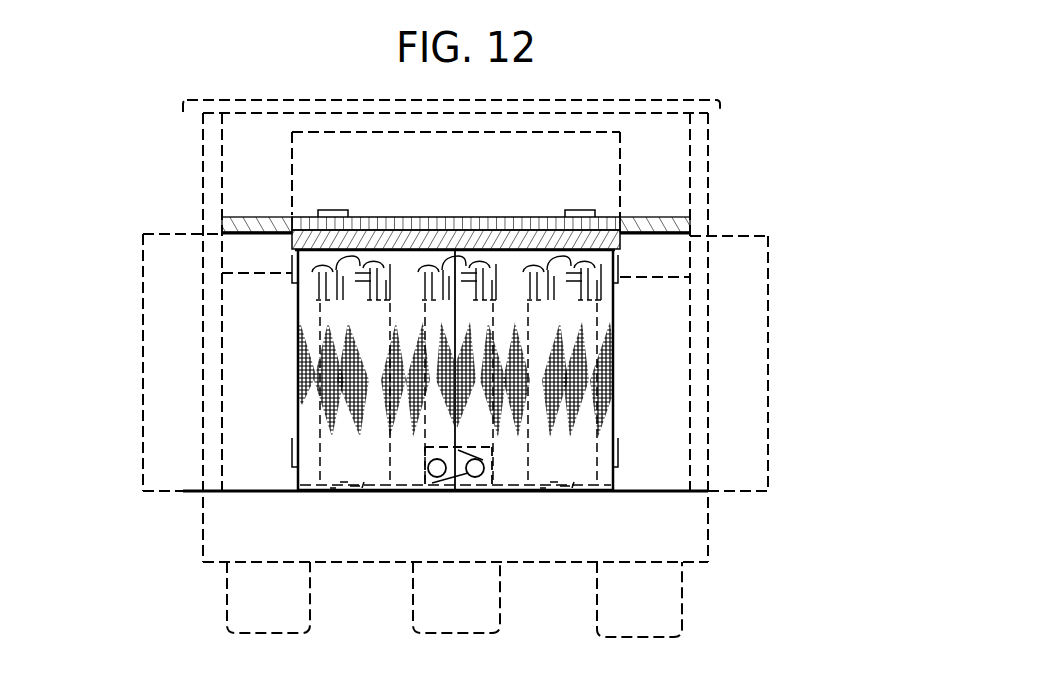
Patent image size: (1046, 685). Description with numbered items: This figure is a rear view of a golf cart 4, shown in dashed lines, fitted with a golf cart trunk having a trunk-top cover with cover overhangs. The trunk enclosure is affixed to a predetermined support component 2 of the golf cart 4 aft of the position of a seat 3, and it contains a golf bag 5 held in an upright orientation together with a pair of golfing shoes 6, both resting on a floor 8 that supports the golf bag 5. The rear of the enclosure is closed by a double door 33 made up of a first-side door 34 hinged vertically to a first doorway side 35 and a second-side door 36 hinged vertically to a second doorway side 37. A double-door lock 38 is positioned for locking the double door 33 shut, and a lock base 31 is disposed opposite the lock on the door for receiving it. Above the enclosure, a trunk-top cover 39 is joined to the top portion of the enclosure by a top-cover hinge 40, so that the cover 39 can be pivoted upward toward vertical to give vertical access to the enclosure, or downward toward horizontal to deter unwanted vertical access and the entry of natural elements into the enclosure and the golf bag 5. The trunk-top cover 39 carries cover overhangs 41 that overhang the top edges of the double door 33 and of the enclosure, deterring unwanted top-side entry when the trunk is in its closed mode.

The support component 2 is at (245, 225).
The seat 3 is at (250, 272).
The golf cart 4 is at (792, 0).
The golf bag 5 is at (613, 322).
The golfing shoes 6 is at (560, 494).
The floor 8 is at (392, 494).
The lock base 31 is at (476, 477).
The double door 33 is at (792, 365).
The first-side door 34 is at (395, 268).
The first doorway side 35 is at (298, 392).
The second-side door 36 is at (523, 272).
The second doorway side 37 is at (613, 398).
The double-door lock 38 is at (437, 477).
The trunk-top cover 39 is at (432, 221).
The top-cover hinge 40 is at (333, 209).
The cover overhangs 41 is at (480, 240).